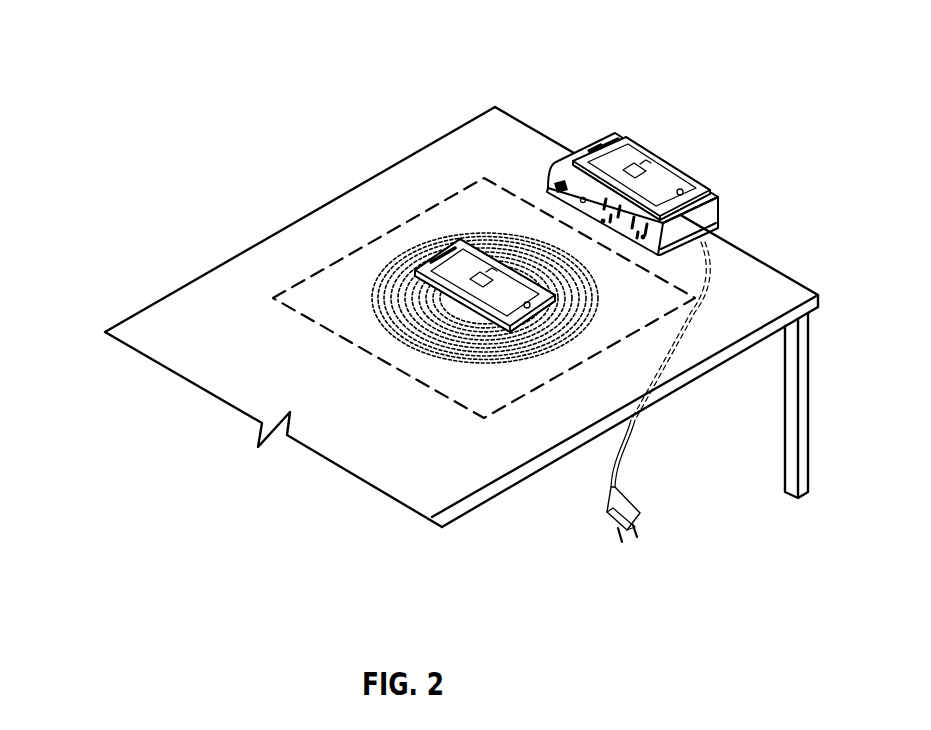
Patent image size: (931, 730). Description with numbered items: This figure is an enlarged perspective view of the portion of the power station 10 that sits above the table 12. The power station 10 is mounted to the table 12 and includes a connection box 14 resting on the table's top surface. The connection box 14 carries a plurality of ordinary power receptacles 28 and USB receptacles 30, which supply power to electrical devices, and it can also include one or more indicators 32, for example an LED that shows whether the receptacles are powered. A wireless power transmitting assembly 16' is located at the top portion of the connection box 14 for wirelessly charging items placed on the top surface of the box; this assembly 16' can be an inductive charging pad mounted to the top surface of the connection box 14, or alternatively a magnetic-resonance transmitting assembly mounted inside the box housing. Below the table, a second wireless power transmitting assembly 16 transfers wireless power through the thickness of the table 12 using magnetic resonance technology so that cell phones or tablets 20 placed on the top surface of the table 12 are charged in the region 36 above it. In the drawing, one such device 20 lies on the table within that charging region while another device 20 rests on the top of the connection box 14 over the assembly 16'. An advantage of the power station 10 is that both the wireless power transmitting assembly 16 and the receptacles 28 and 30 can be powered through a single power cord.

The power station 10 is at (115, 35).
The table 12 is at (758, 273).
The connection box 14 is at (718, 187).
The wireless power transmitting assembly 16 is at (484, 361).
The wireless power transmitting assembly 16' is at (580, 99).
The cell phones or tablets 20 is at (470, 257).
The ordinary power receptacles 28 is at (603, 223).
The USB receptacles 30 is at (560, 160).
The indicator 32 is at (584, 197).
The charging field 36 is at (425, 240).